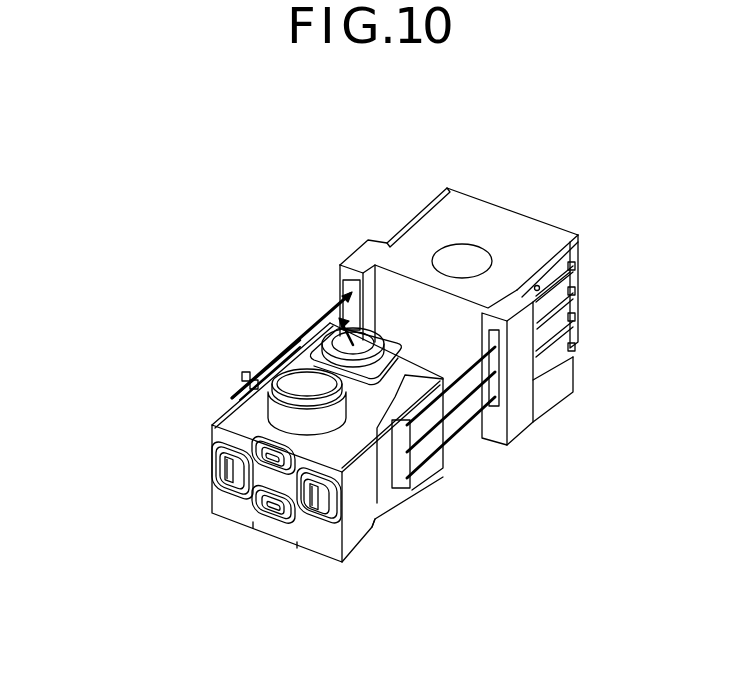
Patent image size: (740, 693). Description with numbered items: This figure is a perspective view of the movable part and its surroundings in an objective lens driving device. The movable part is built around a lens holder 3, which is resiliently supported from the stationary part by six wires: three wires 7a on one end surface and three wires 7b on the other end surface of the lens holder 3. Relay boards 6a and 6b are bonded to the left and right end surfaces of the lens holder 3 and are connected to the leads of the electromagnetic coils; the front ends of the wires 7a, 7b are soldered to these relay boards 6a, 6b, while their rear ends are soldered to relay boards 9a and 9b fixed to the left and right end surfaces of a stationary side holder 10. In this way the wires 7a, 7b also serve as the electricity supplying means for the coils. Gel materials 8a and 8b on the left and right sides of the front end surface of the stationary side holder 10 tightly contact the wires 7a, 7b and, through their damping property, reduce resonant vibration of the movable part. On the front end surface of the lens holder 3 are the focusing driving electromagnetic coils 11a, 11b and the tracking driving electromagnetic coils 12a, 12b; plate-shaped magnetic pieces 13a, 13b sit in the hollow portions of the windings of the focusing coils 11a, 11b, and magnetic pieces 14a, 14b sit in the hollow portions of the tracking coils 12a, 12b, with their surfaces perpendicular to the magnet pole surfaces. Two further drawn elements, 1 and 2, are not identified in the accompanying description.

The terminal 1 is at (298, 387).
The disc member 2 is at (323, 327).
The lens holder 3 is at (360, 503).
The relay board 6a is at (413, 487).
The relay board 6b is at (246, 376).
The wire 7a is at (470, 428).
The wire 7b is at (257, 383).
The gel material 8a is at (508, 377).
The gel material 8b is at (348, 297).
The relay board 9a is at (560, 287).
The relay board 9b is at (423, 210).
The stationary side holder 10 is at (522, 238).
The focusing driving electromagnetic coil 11a is at (227, 488).
The focusing driving electromagnetic coil 11b is at (313, 517).
The tracking driving electromagnetic coil 12a is at (258, 440).
The tracking driving electromagnetic coil 12b is at (255, 527).
The magnetic piece 13a is at (223, 472).
The magnetic piece 13b is at (323, 503).
The magnetic piece 14a is at (268, 456).
The magnetic piece 14b is at (272, 505).